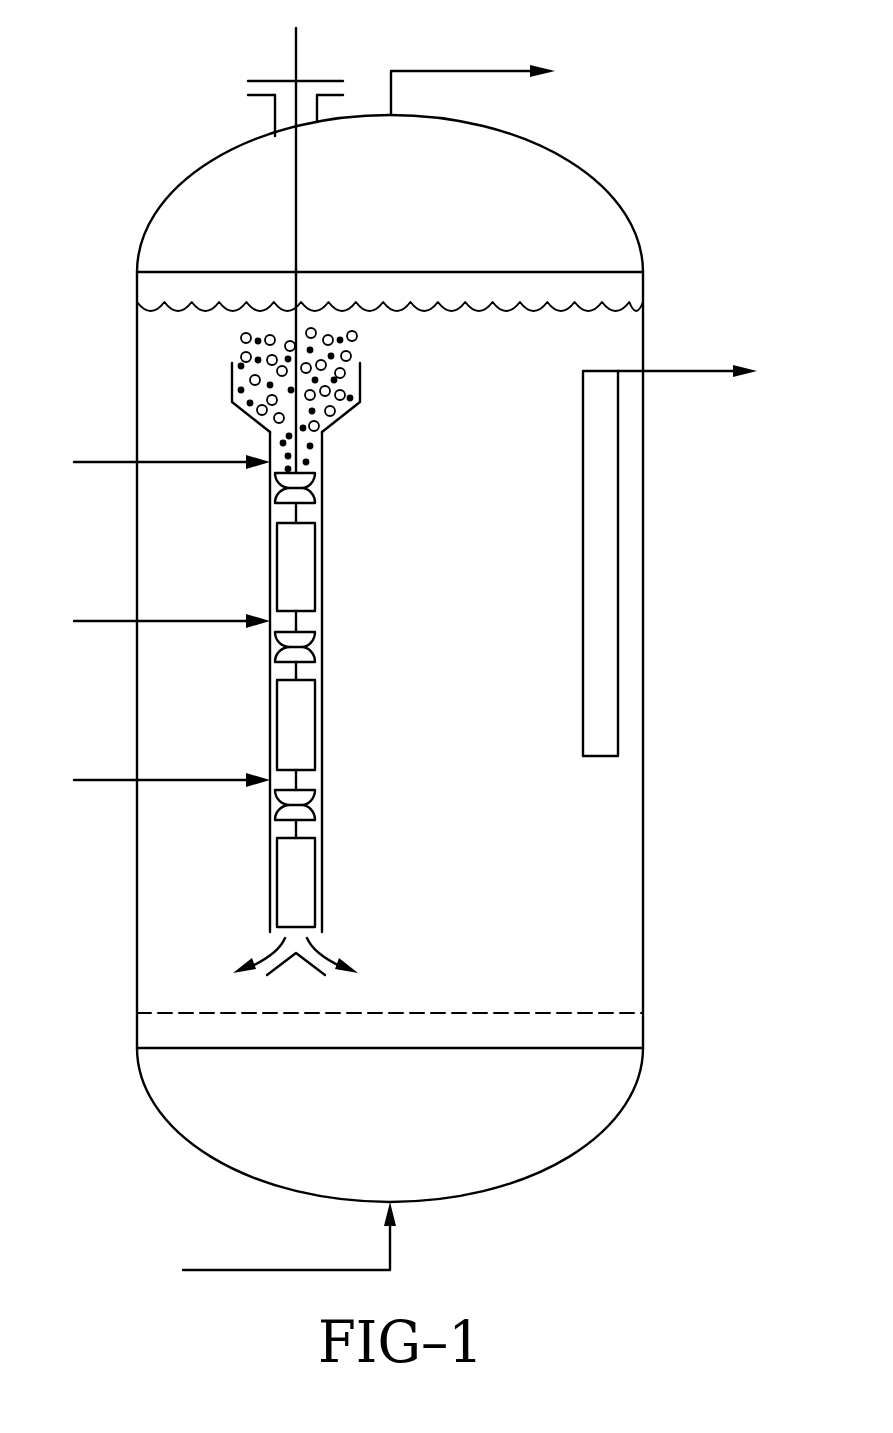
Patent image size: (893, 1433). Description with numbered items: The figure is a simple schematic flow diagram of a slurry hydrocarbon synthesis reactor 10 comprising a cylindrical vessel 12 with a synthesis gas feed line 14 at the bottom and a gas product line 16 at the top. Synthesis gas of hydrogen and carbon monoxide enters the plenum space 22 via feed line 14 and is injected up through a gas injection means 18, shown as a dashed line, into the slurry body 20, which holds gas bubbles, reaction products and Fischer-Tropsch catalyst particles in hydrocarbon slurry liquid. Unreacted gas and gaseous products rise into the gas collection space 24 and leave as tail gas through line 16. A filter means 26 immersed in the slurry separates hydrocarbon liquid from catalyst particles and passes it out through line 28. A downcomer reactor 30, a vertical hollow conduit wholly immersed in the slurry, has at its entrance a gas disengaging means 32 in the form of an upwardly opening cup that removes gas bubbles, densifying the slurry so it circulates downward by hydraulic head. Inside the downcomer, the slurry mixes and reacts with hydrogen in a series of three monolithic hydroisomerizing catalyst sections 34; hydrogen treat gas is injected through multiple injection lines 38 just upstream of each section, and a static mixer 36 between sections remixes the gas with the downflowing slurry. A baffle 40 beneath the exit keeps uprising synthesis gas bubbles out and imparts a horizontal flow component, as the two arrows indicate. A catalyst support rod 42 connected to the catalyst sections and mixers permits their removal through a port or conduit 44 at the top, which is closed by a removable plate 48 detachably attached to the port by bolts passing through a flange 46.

The slurry hydrocarbon synthesis reactor 10 is at (90, 100).
The cylindrical vessel 12 is at (135, 378).
The synthesis gas feed line 14 is at (312, 1268).
The gas product line 16 is at (443, 70).
The gas injection means 18 is at (610, 1013).
The slurry body 20 is at (608, 823).
The plenum space 22 is at (365, 1144).
The gas collection space 24 is at (363, 214).
The filter means 26 is at (618, 592).
The liquid product line 28 is at (685, 371).
The downcomer reactor 30 is at (270, 548).
The gas disengaging means 32 is at (362, 375).
The monolithic hydroisomerizing catalyst section 34 is at (300, 568).
The static mixer 36 is at (318, 487).
The hydrogen treat gas injection line 38 is at (100, 462).
The baffle 40 is at (322, 977).
The catalyst support rod 42 is at (294, 226).
The port or conduit 44 is at (273, 122).
The flange 46 is at (248, 95).
The removable plate 48 is at (268, 81).